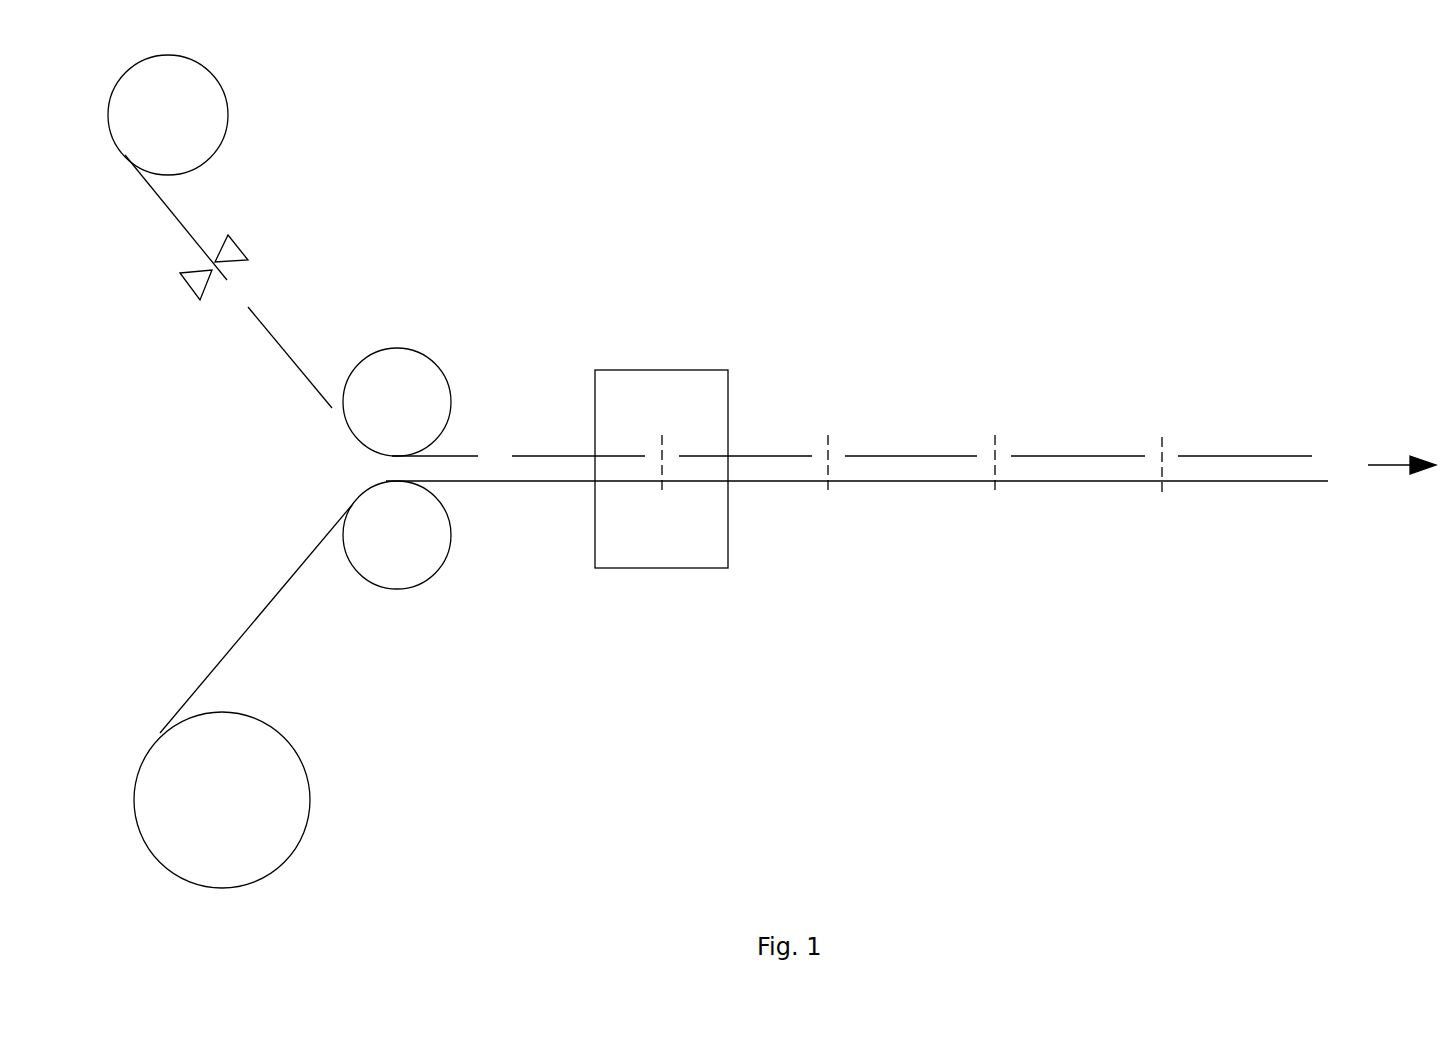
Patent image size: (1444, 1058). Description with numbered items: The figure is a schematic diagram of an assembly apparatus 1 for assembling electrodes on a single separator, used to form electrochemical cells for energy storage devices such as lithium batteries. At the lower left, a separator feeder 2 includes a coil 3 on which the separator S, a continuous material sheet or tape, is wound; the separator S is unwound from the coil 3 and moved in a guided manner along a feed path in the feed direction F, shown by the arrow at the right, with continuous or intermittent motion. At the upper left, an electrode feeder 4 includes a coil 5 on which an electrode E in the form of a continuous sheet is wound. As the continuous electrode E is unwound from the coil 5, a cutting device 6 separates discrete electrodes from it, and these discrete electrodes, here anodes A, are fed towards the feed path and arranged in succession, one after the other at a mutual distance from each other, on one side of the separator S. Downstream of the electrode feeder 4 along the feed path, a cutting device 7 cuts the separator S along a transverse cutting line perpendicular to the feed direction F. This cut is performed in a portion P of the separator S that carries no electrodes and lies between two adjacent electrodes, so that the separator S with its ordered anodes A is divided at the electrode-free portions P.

The assembly apparatus 1 is at (1258, 138).
The separator feeder 2 is at (218, 590).
The coil 3 is at (293, 822).
The electrode feeder 4 is at (360, 242).
The coil 5 is at (198, 95).
The cutting device 6 is at (193, 283).
The cutting device 7 is at (670, 357).
The anode A is at (310, 385).
The electrode E is at (172, 212).
The separator S is at (280, 593).
The portion P is at (995, 481).
The feed direction F is at (1385, 465).